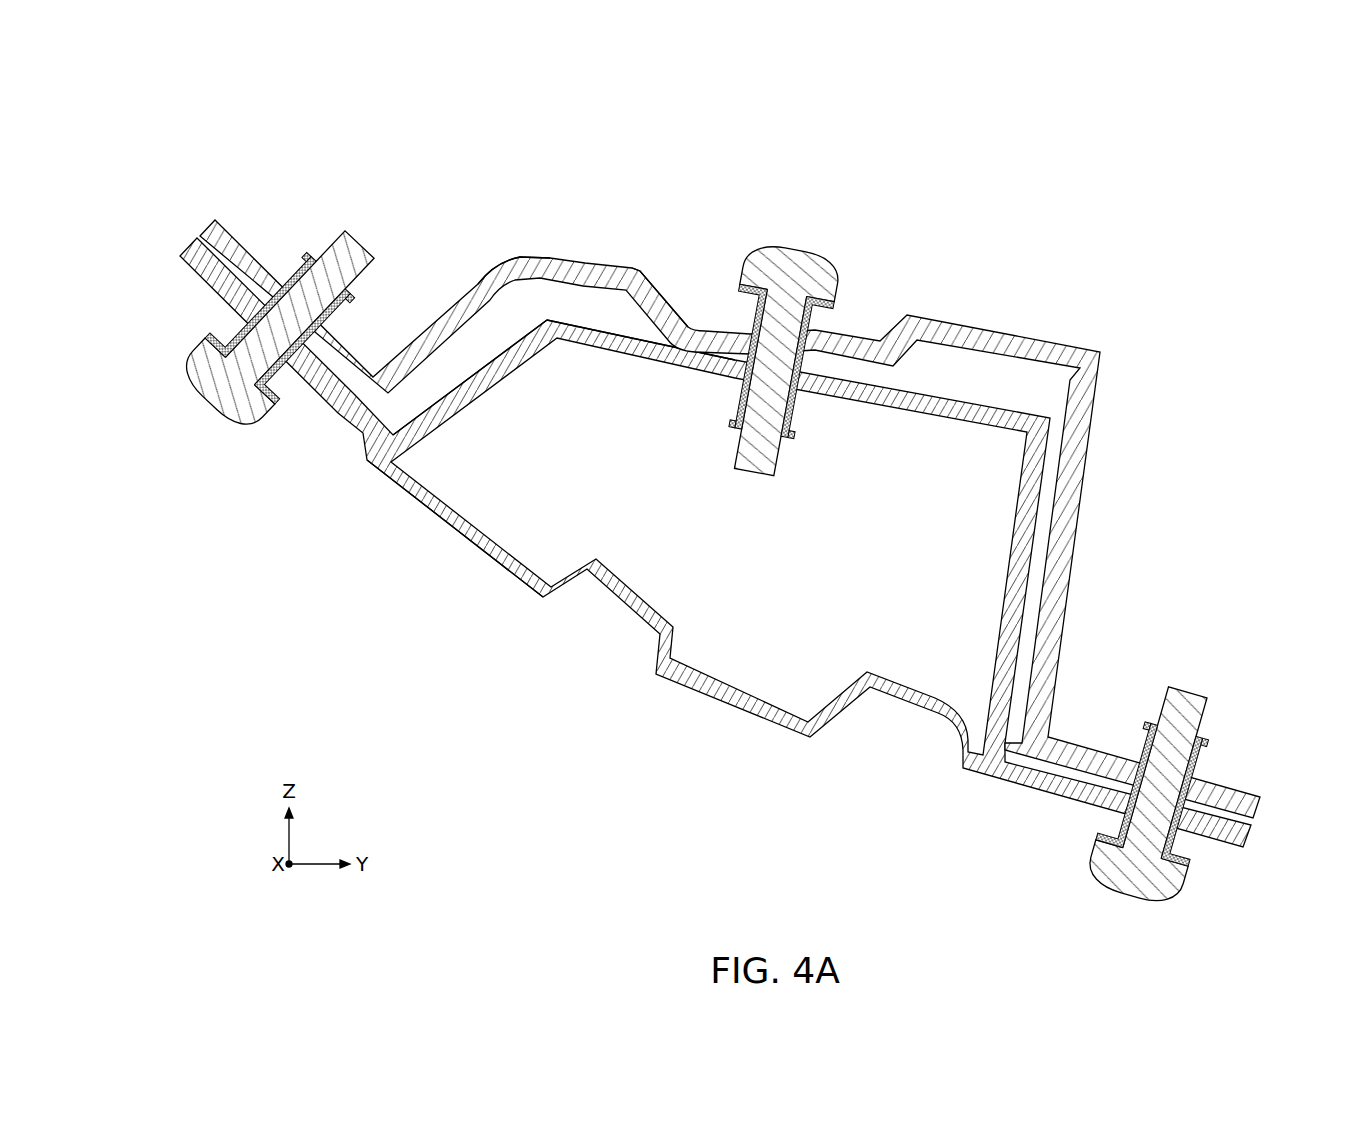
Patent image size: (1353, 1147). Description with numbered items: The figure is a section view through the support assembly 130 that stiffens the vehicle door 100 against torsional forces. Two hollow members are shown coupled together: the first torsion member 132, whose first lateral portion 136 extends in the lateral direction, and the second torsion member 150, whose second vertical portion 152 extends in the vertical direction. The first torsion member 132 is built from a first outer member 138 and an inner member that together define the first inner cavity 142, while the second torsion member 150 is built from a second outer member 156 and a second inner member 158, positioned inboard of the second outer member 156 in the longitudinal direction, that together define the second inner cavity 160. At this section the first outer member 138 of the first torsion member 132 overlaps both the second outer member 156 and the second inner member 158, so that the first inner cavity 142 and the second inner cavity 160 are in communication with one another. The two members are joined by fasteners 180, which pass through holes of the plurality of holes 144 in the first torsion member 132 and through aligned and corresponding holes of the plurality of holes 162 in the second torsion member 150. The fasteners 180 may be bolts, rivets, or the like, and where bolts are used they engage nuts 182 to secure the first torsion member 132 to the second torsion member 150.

The vehicle door 100 is at (173, 160).
The support assembly 130 is at (240, 182).
The first torsion member 132 is at (977, 314).
The first lateral portion 136 is at (548, 238).
The first outer member 138 is at (607, 258).
The first inner cavity 142 is at (850, 607).
The plurality of holes 144 is at (283, 272).
The second torsion member 150 is at (688, 713).
The second vertical portion 152 is at (537, 392).
The second outer member 156 is at (641, 374).
The second inner member 158 is at (481, 578).
The second inner cavity 160 is at (896, 594).
The plurality of holes 162 is at (220, 320).
The fasteners 180 is at (226, 404).
The nuts 182 is at (358, 309).